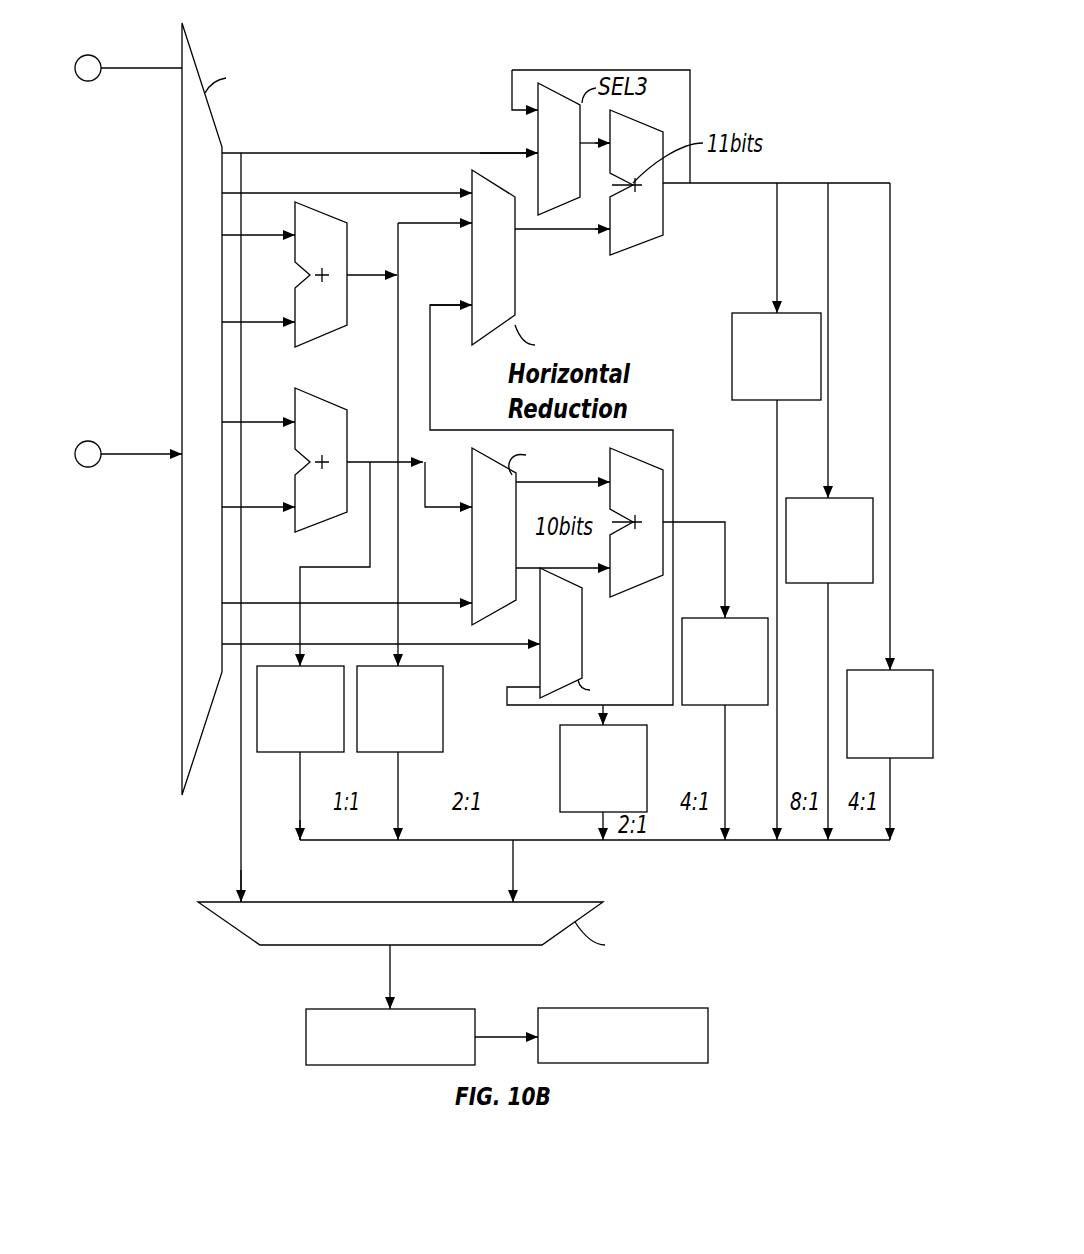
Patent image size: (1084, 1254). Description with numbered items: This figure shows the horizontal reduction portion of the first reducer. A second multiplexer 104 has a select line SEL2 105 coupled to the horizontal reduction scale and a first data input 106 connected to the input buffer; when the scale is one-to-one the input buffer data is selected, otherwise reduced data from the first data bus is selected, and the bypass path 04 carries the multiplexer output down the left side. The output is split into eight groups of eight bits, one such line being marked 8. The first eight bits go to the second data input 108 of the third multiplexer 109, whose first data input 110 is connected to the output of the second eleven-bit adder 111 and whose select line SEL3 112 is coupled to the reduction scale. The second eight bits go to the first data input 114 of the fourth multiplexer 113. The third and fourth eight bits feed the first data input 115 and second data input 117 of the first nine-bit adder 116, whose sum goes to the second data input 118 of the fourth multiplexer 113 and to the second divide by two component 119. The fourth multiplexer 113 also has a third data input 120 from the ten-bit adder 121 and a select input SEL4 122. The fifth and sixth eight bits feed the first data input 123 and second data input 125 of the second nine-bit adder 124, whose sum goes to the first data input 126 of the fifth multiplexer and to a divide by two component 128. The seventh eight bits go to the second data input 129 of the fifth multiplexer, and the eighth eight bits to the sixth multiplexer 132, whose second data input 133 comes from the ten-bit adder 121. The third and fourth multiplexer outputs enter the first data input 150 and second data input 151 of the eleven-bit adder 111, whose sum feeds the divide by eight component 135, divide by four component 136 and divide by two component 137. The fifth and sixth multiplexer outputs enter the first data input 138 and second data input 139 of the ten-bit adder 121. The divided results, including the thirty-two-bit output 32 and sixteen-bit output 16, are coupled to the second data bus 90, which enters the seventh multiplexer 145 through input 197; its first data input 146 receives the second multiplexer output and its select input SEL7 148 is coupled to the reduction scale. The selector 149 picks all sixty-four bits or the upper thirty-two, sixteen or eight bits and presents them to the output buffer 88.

The second multiplexer 104 is at (182, 62).
The select line (SEL2) 105 is at (250, 62).
The first data input 106 is at (180, 218).
The bypass line 04 is at (241, 800).
The 8-bit data line 8 is at (280, 150).
The second data input 108 is at (528, 152).
The third multiplexer 109 is at (560, 83).
The first data input 110 is at (532, 108).
The second eleven-bit adder 111 is at (648, 240).
The select line (SEL3) 112 is at (625, 70).
The fourth multiplexer 113 is at (518, 252).
The first data input 114 is at (468, 185).
The first data input 115 is at (292, 232).
The first nine-bit adder 116 is at (343, 218).
The second data input 117 is at (292, 318).
The second data input 118 is at (470, 220).
The second divide by two component 119 is at (443, 676).
The third data input 120 is at (430, 310).
The ten-bit adder 121 is at (633, 455).
The select input (SEL4) 122 is at (600, 343).
The first data input 123 is at (292, 418).
The second nine-bit adder 124 is at (338, 405).
The second data input 125 is at (292, 503).
The first data input 126 is at (472, 450).
The second divide by two component 128 is at (257, 693).
The second data input 129 is at (462, 598).
The sixth multiplexer 132 is at (572, 680).
The second data input 133 is at (540, 705).
The second divide by eight component 135 is at (788, 313).
The third divide by four component 136 is at (843, 498).
The fifth divide by two component 137 is at (870, 670).
The first data input 138 is at (590, 484).
The second data input 139 is at (595, 567).
The 16-bit output line 16 is at (725, 740).
The 32-bit output line 32 is at (335, 840).
The second data bus 90 is at (890, 840).
The seventh multiplexer 145 is at (225, 922).
The first data input 146 is at (218, 900).
The select input (SEL7) 148 is at (640, 925).
The selector 149 is at (306, 1037).
The first data input 150 is at (612, 132).
The second data input 151 is at (613, 250).
The input to multiplexer 145 197 is at (578, 900).
The output buffer 88 is at (710, 1037).